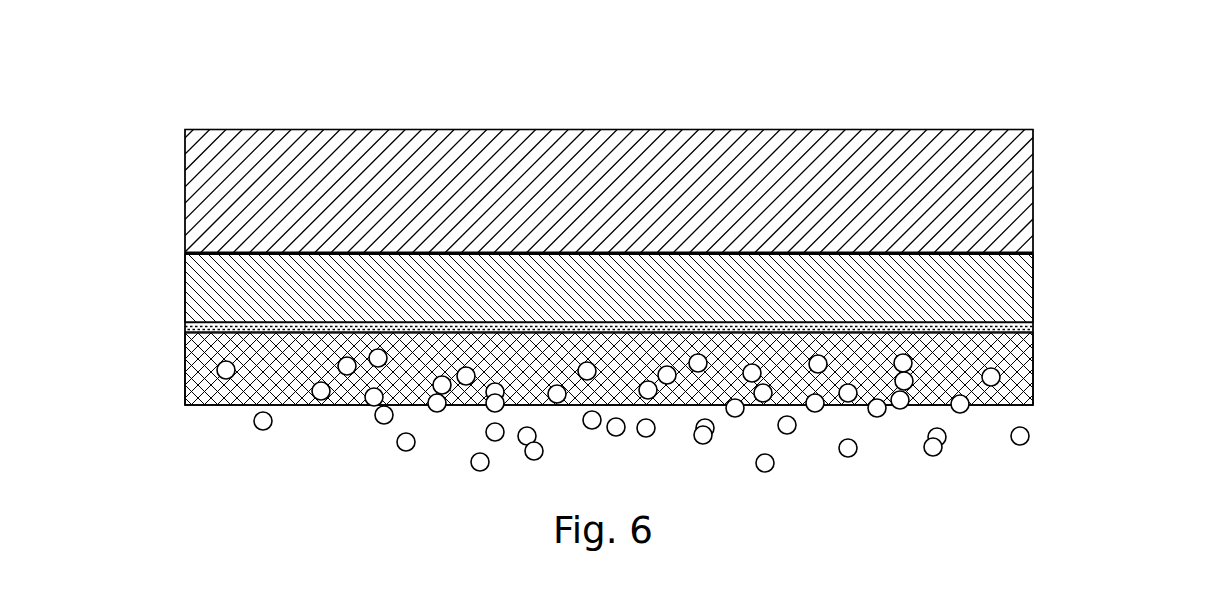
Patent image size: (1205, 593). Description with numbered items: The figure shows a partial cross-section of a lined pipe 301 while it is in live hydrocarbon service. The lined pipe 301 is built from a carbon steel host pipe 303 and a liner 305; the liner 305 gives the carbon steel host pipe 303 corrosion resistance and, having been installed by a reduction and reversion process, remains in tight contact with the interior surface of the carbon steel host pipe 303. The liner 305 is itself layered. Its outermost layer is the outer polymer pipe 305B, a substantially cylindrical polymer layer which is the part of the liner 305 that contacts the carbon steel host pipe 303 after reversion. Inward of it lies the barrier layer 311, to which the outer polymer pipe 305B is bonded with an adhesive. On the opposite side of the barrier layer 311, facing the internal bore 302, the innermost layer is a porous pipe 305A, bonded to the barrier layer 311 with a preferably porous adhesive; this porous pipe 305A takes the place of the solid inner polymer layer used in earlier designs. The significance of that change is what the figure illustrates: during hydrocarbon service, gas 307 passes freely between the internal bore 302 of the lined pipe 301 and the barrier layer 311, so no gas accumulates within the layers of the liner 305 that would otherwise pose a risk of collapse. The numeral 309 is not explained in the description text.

The lined pipe 301 is at (990, 100).
The internal bore 302 is at (1020, 460).
The carbon steel host pipe 303 is at (1015, 175).
The liner 305 is at (157, 253).
The porous pipe 305A is at (1015, 368).
The outer polymer pipe 305B is at (1013, 298).
The gas 307 is at (917, 388).
The binder matrix 309 is at (537, 353).
The barrier layer 311 is at (213, 325).